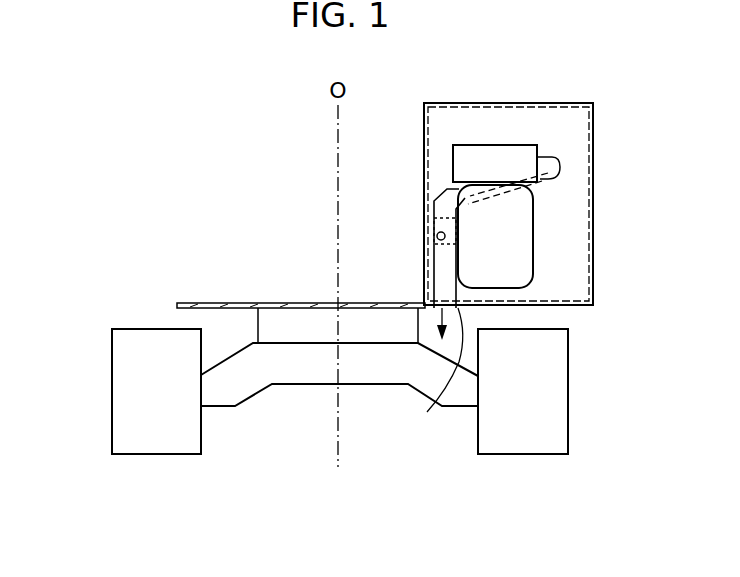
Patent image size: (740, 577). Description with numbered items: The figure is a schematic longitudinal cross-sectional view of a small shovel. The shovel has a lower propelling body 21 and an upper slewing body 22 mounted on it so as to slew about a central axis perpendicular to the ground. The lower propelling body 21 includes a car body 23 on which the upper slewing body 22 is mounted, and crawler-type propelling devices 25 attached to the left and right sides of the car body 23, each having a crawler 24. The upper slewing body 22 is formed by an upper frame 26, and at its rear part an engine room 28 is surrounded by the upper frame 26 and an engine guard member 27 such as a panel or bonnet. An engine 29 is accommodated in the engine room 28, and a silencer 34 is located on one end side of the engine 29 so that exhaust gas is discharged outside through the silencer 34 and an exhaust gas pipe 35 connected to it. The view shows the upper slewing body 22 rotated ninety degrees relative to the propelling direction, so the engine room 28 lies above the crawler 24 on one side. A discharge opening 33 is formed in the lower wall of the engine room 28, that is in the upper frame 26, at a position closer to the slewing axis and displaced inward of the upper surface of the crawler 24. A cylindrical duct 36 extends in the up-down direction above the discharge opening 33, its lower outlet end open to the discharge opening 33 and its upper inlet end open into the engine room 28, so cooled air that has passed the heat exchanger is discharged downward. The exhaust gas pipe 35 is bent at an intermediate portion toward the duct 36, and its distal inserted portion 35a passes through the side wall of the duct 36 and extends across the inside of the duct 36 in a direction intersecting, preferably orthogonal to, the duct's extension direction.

The lower propelling body 21 is at (572, 392).
The upper slewing body 22 is at (596, 185).
The car body 23 is at (370, 387).
The crawler 24 is at (118, 347).
The crawler-type propelling device 25 is at (162, 455).
The upper frame 26 is at (300, 302).
The engine guard member 27 is at (555, 103).
The engine room 28 is at (578, 135).
The engine 29 is at (534, 243).
The discharge opening 33 is at (431, 377).
The silencer 34 is at (492, 145).
The exhaust gas pipe 35 is at (438, 192).
The inserted portion 35a is at (436, 241).
The duct 36 is at (431, 283).